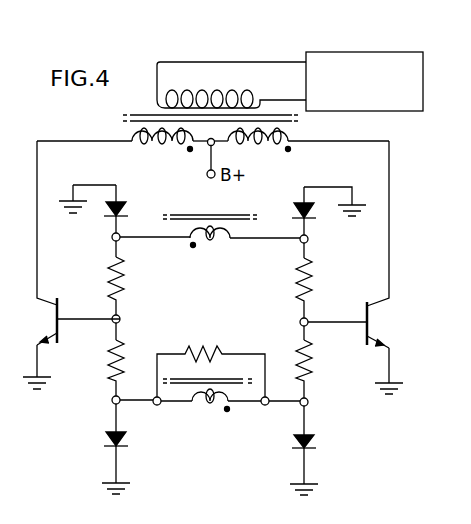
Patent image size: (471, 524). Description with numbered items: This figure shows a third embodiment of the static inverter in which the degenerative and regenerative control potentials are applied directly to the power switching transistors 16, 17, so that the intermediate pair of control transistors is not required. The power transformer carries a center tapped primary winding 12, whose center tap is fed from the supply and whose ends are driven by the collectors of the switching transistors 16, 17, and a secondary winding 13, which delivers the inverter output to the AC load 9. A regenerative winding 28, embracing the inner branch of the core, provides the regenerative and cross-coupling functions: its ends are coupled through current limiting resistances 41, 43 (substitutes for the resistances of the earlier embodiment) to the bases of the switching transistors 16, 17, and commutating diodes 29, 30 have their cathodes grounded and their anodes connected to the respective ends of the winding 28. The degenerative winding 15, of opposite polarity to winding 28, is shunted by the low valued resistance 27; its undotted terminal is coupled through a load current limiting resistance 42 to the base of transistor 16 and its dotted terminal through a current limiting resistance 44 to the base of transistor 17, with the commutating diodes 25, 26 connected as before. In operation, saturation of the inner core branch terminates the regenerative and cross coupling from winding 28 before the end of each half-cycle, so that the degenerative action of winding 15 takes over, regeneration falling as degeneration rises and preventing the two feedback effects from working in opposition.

The AC load 9 is at (353, 52).
The secondary winding 13 is at (243, 95).
The center tapped primary winding 12 is at (169, 150).
The regenerative winding 28 is at (210, 250).
The degenerative winding 15 is at (210, 420).
The low valued resistance 27 is at (208, 346).
The commutating diode 29 is at (125, 212).
The commutating diode 30 is at (296, 212).
The commutating diode 25 is at (103, 437).
The commutating diode 26 is at (315, 444).
The current limiting resistance 41 is at (108, 274).
The load current limiting resistance 42 is at (108, 354).
The current limiting resistance 43 is at (312, 270).
The current limiting resistance 44 is at (315, 362).
The power switching transistor 16 is at (48, 318).
The power switching transistor 17 is at (380, 324).